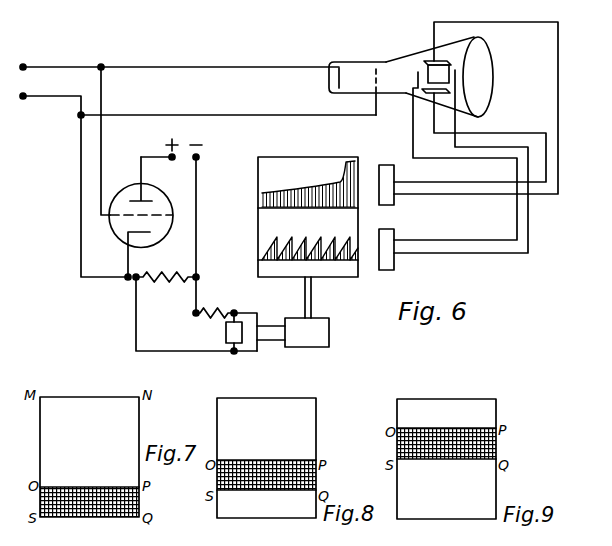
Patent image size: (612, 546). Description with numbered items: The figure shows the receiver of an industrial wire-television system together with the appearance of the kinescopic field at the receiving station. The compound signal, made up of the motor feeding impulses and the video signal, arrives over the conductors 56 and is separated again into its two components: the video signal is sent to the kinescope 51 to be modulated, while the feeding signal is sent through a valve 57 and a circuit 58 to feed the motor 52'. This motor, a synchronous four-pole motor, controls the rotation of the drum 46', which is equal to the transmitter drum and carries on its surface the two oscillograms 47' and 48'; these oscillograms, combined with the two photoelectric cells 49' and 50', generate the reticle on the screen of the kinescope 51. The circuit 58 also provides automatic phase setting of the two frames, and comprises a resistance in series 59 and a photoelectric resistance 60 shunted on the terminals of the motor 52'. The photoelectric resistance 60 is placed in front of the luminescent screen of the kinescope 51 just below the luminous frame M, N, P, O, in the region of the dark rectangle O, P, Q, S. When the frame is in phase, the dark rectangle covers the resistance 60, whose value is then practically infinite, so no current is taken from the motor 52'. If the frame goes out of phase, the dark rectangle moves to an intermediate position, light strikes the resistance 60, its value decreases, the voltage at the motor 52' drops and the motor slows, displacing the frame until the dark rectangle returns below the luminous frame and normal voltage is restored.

The drum 46' is at (290, 209).
The oscillogram 47' is at (308, 174).
The oscillogram 48' is at (290, 250).
The photoelectric cell 49' is at (384, 172).
The photoelectric cell 50' is at (398, 261).
The kinescope 51 is at (397, 66).
The motor 52' is at (311, 312).
The conductors 56 is at (50, 80).
The valve 57 is at (118, 233).
The circuit 58 is at (194, 300).
The resistance in series 59 is at (216, 311).
The photoelectric resistance 60 is at (228, 339).